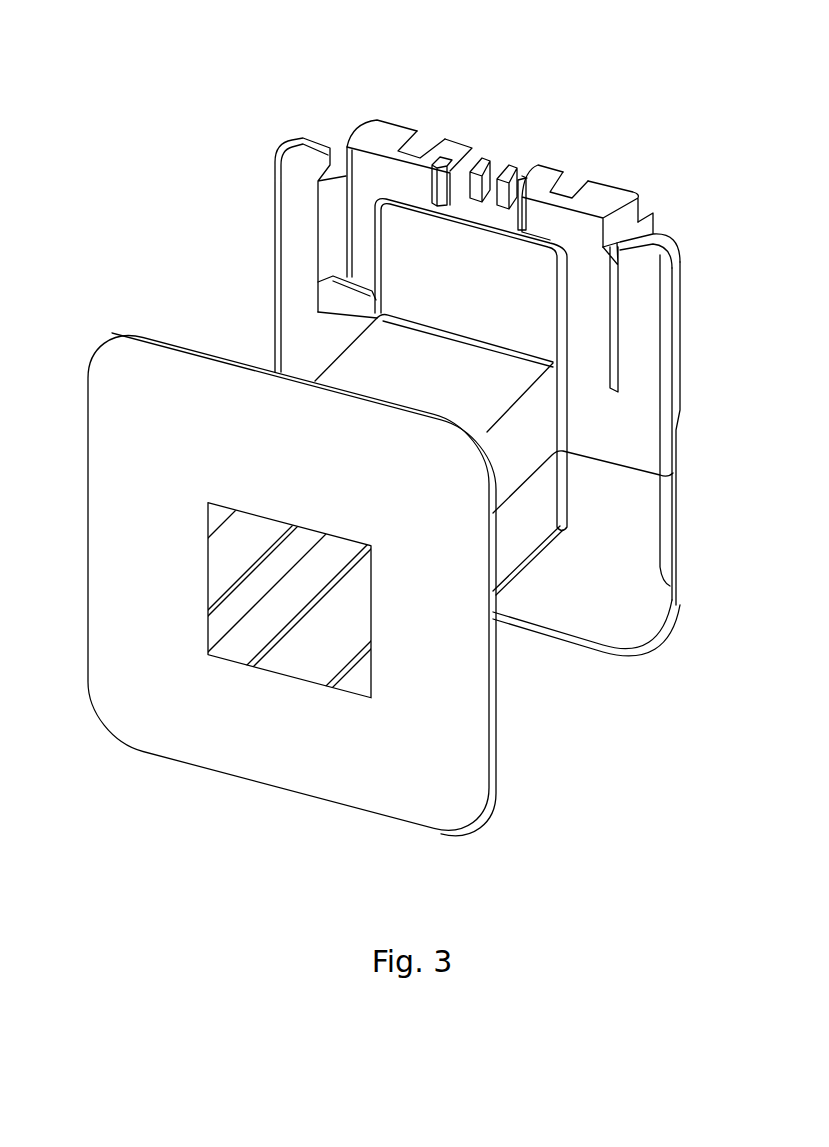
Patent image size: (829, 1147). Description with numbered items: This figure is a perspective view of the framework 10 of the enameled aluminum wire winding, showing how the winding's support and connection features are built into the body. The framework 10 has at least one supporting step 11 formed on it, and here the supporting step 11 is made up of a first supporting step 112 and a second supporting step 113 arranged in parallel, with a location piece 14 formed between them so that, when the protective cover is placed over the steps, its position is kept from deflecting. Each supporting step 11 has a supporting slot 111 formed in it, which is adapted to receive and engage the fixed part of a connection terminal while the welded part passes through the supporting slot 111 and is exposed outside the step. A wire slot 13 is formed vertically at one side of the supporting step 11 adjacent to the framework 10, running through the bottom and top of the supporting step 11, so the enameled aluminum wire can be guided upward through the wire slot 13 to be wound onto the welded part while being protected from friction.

The framework 10 is at (72, 41).
The supporting step 11 is at (637, 213).
The supporting slot 111 is at (417, 148).
The first supporting step 112 is at (603, 198).
The second supporting step 113 is at (370, 135).
The wire slot 13 is at (443, 170).
The location piece 14 is at (490, 163).